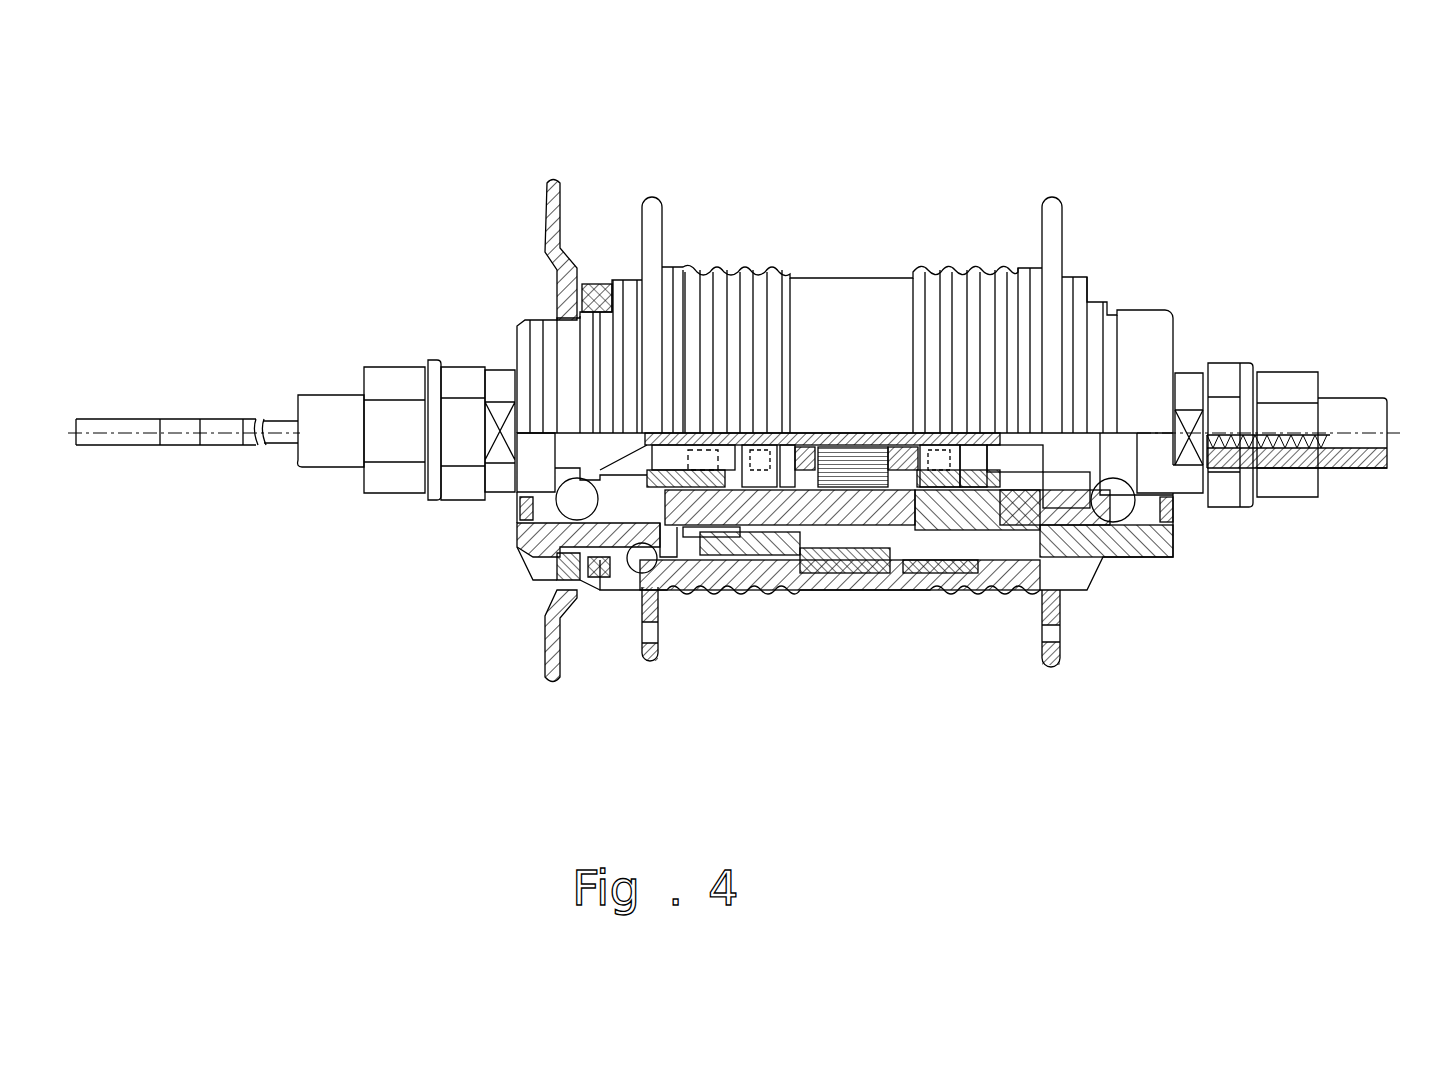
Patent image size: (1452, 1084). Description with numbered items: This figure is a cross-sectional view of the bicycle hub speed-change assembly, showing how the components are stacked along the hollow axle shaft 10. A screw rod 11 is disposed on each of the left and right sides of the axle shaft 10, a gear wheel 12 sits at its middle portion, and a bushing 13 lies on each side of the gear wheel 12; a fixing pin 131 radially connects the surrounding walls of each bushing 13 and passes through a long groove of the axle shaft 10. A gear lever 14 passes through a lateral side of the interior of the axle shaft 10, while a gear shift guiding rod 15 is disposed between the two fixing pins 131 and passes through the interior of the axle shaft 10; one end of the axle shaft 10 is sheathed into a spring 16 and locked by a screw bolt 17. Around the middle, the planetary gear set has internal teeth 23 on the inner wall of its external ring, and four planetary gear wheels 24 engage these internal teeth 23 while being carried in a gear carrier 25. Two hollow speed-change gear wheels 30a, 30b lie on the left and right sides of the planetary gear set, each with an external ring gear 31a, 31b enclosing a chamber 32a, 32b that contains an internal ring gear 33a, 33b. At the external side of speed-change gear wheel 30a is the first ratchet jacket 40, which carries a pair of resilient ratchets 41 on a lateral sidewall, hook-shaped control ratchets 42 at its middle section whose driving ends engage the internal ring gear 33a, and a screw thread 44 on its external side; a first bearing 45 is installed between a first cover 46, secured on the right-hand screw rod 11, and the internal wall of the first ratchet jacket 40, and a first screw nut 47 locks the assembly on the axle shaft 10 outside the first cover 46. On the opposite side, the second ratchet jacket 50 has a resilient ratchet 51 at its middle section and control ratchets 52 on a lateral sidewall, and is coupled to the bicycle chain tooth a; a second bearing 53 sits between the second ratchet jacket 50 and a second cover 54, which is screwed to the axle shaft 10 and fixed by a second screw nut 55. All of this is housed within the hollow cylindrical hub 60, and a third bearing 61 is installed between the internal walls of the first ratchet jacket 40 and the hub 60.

The hollow axle shaft 10 is at (1350, 417).
The screw rod 11 is at (337, 413).
The gear wheel 12 is at (843, 580).
The bushing 13 is at (675, 560).
The fixing pin 131 is at (700, 435).
The gear lever 14 is at (838, 437).
The gear shift guiding rod 15 is at (223, 430).
The spring 16 is at (1287, 487).
The screw bolt 17 is at (1385, 467).
The internal teeth 23 is at (877, 580).
The planetary gear wheels 24 is at (822, 580).
The gear carrier 25 is at (810, 440).
The speed-change gear wheel 30a is at (977, 590).
The speed-change gear wheel 30b is at (767, 560).
The external ring gear 31a is at (1013, 590).
The external ring gear 31b is at (712, 560).
The chamber 32a is at (955, 580).
The chamber 32b is at (758, 587).
The internal ring gear 33a is at (937, 590).
The internal ring gear 33b is at (788, 580).
The first ratchet jacket 40 is at (1093, 587).
The resilient ratchets 41 is at (955, 460).
The control ratchets 42 is at (1003, 447).
The screw thread 44 is at (1167, 307).
The first bearing 45 is at (1113, 507).
The first cover 46 is at (1187, 478).
The first screw nut 47 is at (1227, 375).
The second ratchet jacket 50 is at (603, 565).
The resilient ratchet 51 is at (694, 430).
The control ratchets 52 is at (755, 575).
The second bearing 53 is at (563, 502).
The second cover 54 is at (507, 392).
The second screw nut 55 is at (455, 373).
The hub 60 is at (808, 292).
The third bearing 61 is at (645, 560).
The bicycle chain tooth a is at (545, 210).